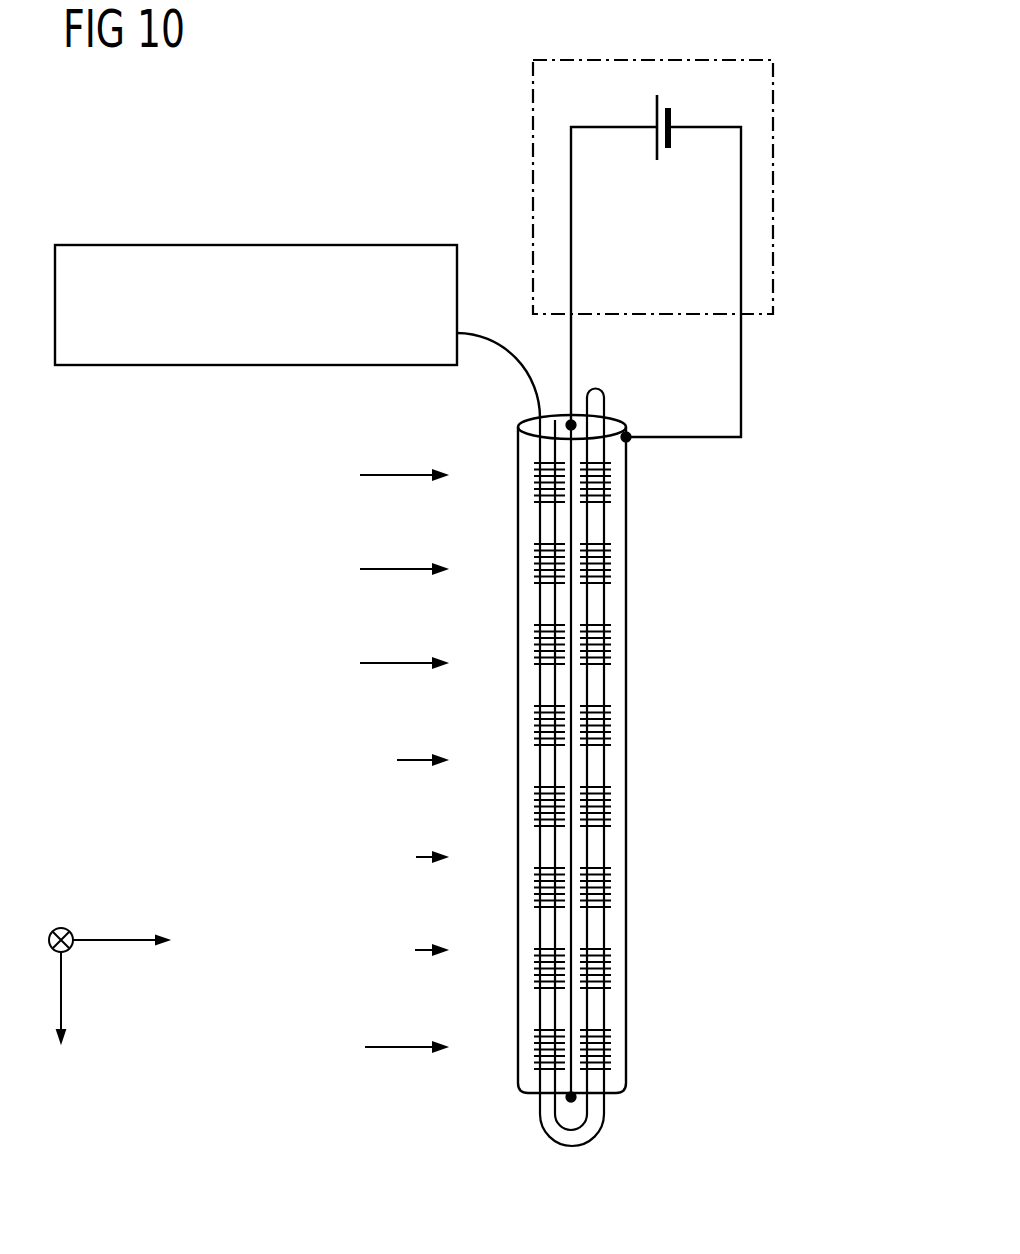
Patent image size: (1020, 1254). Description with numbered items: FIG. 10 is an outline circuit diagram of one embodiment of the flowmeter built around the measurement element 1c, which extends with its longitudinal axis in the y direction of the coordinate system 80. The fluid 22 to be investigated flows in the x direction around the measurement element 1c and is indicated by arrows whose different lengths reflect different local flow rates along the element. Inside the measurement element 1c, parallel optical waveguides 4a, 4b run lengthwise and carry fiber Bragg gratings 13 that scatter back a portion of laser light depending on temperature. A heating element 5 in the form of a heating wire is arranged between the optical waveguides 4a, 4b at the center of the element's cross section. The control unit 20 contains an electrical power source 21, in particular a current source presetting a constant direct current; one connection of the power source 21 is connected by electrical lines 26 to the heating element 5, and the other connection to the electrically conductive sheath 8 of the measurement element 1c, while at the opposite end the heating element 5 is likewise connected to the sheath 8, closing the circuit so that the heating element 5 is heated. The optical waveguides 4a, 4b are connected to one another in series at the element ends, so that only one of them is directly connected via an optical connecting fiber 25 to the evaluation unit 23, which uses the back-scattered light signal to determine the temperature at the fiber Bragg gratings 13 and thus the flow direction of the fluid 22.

The measurement element 1c is at (620, 768).
The optical waveguide 4a is at (541, 684).
The optical waveguide 4b is at (588, 678).
The heating element 5 is at (572, 1022).
The electrically conductive sheath 8 is at (628, 598).
The fiber Bragg grating 13 is at (612, 886).
The control unit 20 is at (775, 143).
The electrical power source 21 is at (665, 97).
The fluid 22 is at (416, 857).
The evaluation unit 23 is at (257, 366).
The optical connecting fiber 25 is at (511, 353).
The electrical lines 26 is at (741, 352).
The coordinate system 80 is at (88, 975).